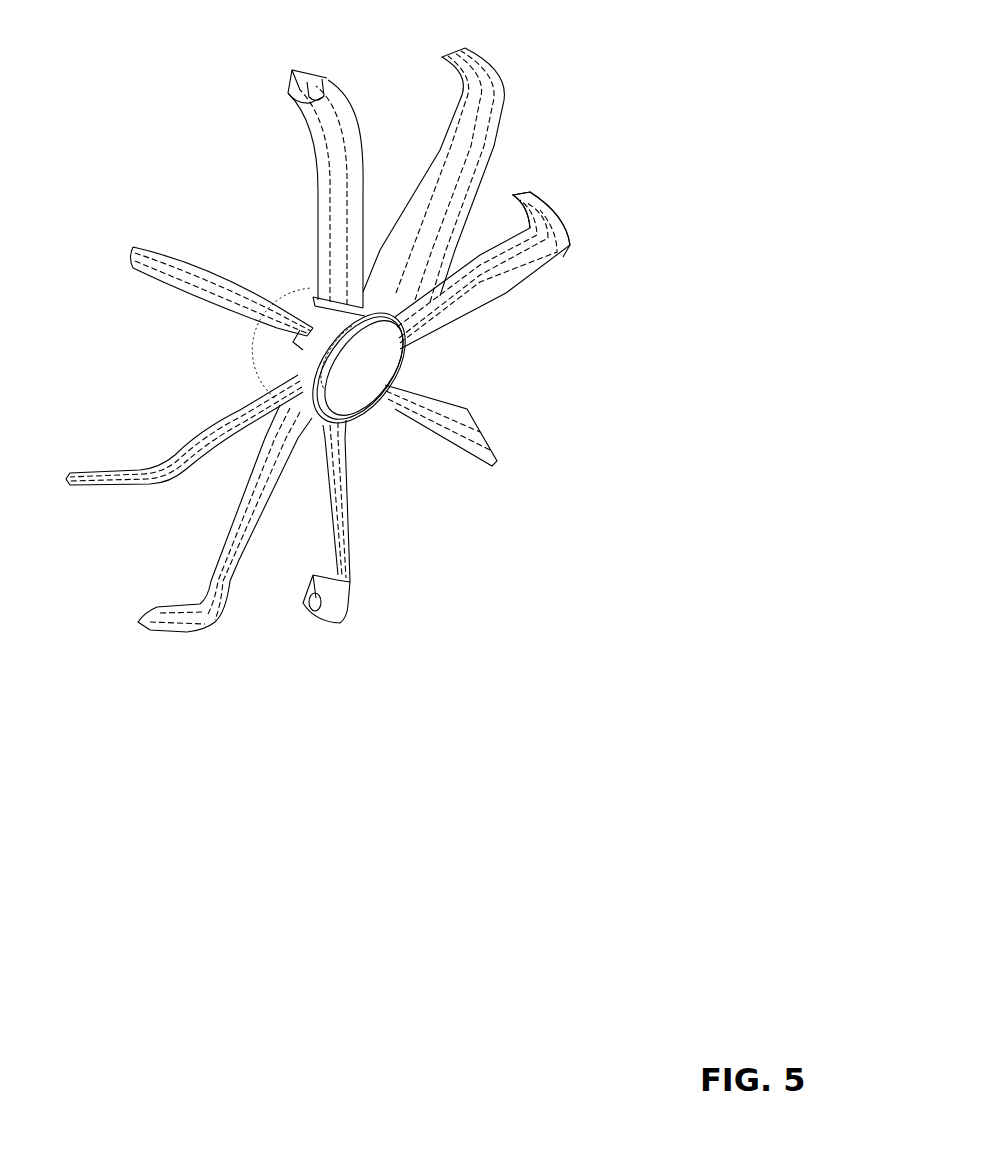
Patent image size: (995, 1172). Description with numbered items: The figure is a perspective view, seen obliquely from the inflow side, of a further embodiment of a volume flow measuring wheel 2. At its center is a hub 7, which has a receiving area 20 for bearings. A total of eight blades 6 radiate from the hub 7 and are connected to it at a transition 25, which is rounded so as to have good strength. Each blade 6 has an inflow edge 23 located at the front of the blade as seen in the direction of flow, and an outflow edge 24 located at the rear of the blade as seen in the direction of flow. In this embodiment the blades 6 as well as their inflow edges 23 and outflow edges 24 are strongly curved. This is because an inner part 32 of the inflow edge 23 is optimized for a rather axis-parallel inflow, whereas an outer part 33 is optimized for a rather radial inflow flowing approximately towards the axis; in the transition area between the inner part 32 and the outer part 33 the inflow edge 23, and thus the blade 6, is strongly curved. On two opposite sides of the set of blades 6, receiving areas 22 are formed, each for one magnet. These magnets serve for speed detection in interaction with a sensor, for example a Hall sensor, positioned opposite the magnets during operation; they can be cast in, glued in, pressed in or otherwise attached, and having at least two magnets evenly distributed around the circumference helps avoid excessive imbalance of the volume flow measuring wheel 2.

The volume flow measuring wheel 2 is at (578, 562).
The blade 6 is at (473, 112).
The hub 7 is at (378, 432).
The receiving area for bearings 20 is at (342, 356).
The receiving area for a magnet 22 is at (313, 90).
The inflow edge 23 is at (358, 107).
The outflow edge 24 is at (315, 128).
The transition 25 is at (300, 340).
The inner part of the inflow edge 32 is at (467, 315).
The outer part of the inflow edge 33 is at (554, 217).